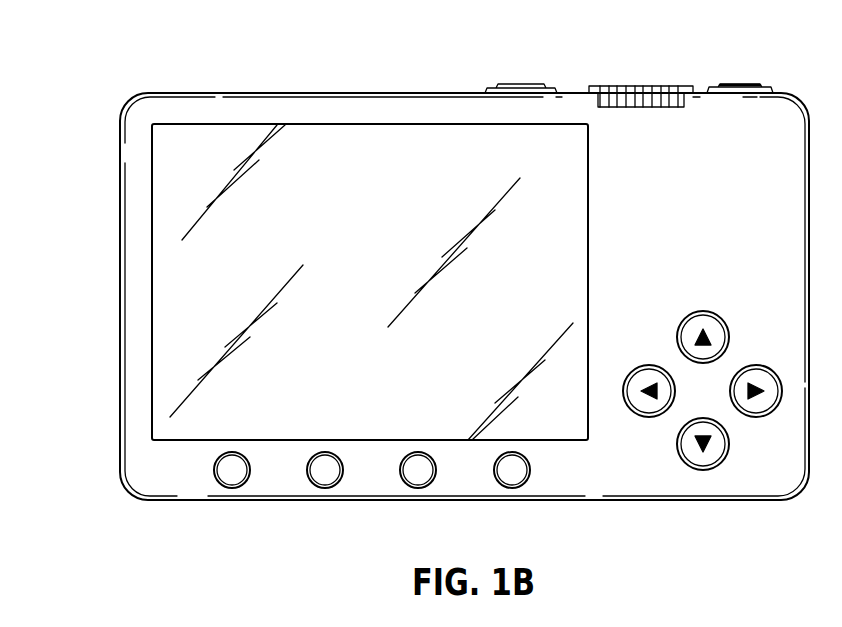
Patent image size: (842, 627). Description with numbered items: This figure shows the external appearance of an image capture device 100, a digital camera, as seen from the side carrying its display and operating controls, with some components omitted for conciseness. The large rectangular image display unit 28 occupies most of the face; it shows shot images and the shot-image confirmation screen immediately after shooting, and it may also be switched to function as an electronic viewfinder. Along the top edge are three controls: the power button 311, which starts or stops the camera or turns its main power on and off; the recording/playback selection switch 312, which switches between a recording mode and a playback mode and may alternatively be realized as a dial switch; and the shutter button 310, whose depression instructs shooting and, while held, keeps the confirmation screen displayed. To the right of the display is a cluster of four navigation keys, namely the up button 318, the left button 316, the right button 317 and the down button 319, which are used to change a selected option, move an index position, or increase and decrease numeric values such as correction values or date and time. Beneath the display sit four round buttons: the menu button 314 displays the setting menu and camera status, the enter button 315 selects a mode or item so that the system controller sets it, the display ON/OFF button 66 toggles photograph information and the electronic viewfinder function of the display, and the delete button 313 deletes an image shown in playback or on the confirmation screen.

The image capture device 100 is at (103, 130).
The image display unit 28 is at (345, 135).
The power button 311 is at (522, 82).
The recording/playback selection switch 312 is at (656, 85).
The shutter button 310 is at (740, 85).
The up button 318 is at (713, 323).
The left button 316 is at (640, 378).
The right button 317 is at (769, 379).
The down button 319 is at (718, 447).
The menu button 314 is at (230, 476).
The enter button 315 is at (322, 478).
The display ON/OFF button 66 is at (418, 480).
The delete button 313 is at (516, 477).